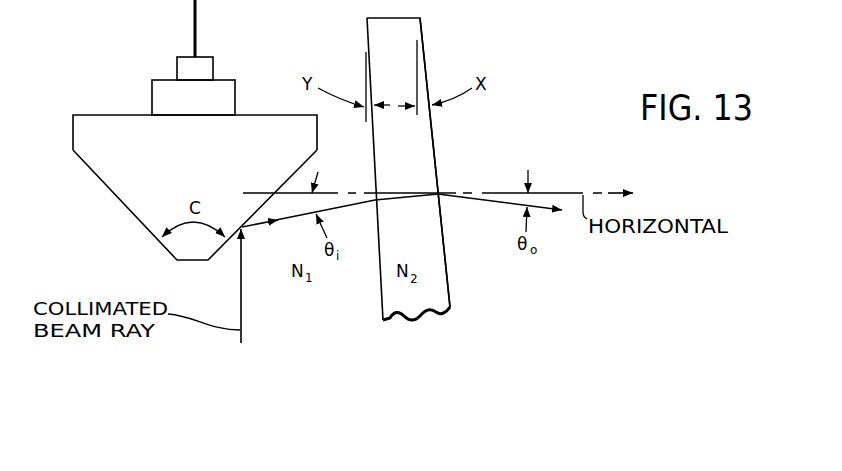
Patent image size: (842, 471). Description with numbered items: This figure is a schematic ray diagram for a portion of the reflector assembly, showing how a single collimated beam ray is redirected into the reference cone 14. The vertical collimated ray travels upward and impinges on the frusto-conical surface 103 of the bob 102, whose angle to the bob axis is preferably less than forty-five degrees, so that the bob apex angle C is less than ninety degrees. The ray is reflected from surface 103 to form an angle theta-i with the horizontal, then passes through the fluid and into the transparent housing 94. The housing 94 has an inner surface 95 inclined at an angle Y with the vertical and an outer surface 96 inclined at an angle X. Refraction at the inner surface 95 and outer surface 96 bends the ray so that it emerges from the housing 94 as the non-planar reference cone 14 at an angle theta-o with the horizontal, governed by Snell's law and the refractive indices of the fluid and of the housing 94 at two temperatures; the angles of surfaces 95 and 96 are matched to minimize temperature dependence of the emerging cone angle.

The bob 102 is at (137, 120).
The frusto-conical surface 103 is at (144, 225).
The housing 94 is at (442, 287).
The inner surface 95 is at (381, 278).
The outer surface 96 is at (444, 246).
The reference cone 14 is at (500, 204).